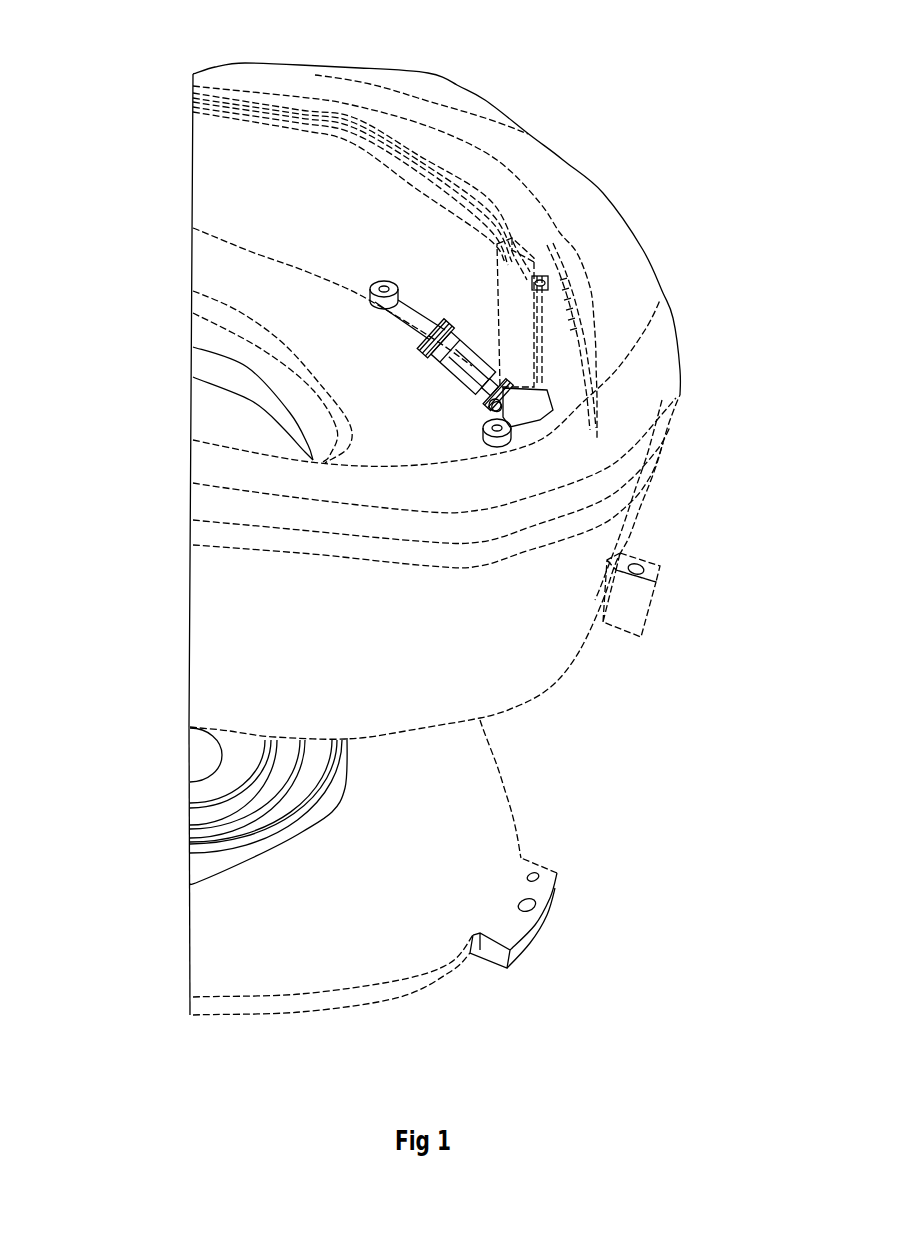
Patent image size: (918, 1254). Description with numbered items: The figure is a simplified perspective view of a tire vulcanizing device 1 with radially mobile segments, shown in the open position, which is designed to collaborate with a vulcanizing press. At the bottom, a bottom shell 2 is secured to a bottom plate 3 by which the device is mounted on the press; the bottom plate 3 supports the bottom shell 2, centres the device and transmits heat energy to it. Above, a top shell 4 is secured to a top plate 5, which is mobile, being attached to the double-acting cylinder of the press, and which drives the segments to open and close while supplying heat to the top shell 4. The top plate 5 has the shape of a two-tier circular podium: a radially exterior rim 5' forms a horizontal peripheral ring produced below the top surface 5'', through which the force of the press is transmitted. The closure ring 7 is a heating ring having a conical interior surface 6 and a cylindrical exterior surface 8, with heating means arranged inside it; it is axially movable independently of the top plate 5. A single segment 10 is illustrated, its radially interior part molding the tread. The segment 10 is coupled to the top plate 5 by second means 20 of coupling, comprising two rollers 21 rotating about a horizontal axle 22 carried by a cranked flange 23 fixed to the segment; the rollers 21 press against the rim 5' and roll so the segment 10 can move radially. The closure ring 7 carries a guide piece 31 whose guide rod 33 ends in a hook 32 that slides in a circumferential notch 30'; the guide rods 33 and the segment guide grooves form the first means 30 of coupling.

The tire vulcanizing device 1 is at (150, 192).
The bottom shell 2 is at (317, 797).
The bottom plate 3 is at (513, 847).
The top shell 4 is at (290, 397).
The top plate 5 is at (274, 345).
The radially exterior rim 5' is at (462, 179).
The top surface 5'' is at (394, 429).
The conical interior surface 6 is at (240, 165).
The closure ring 7 is at (603, 190).
The cylindrical exterior surface 8 is at (560, 635).
The segment 10 is at (513, 427).
The second means of coupling 20 is at (480, 288).
The rollers 21 is at (512, 390).
The horizontal axle 22 is at (495, 405).
The cranked flange 23 is at (547, 417).
The first means of coupling 30 is at (666, 318).
The circumferential notch 30' is at (551, 200).
The guide piece 31 is at (553, 252).
The hook 32 is at (557, 265).
The guide rod 33 is at (528, 325).